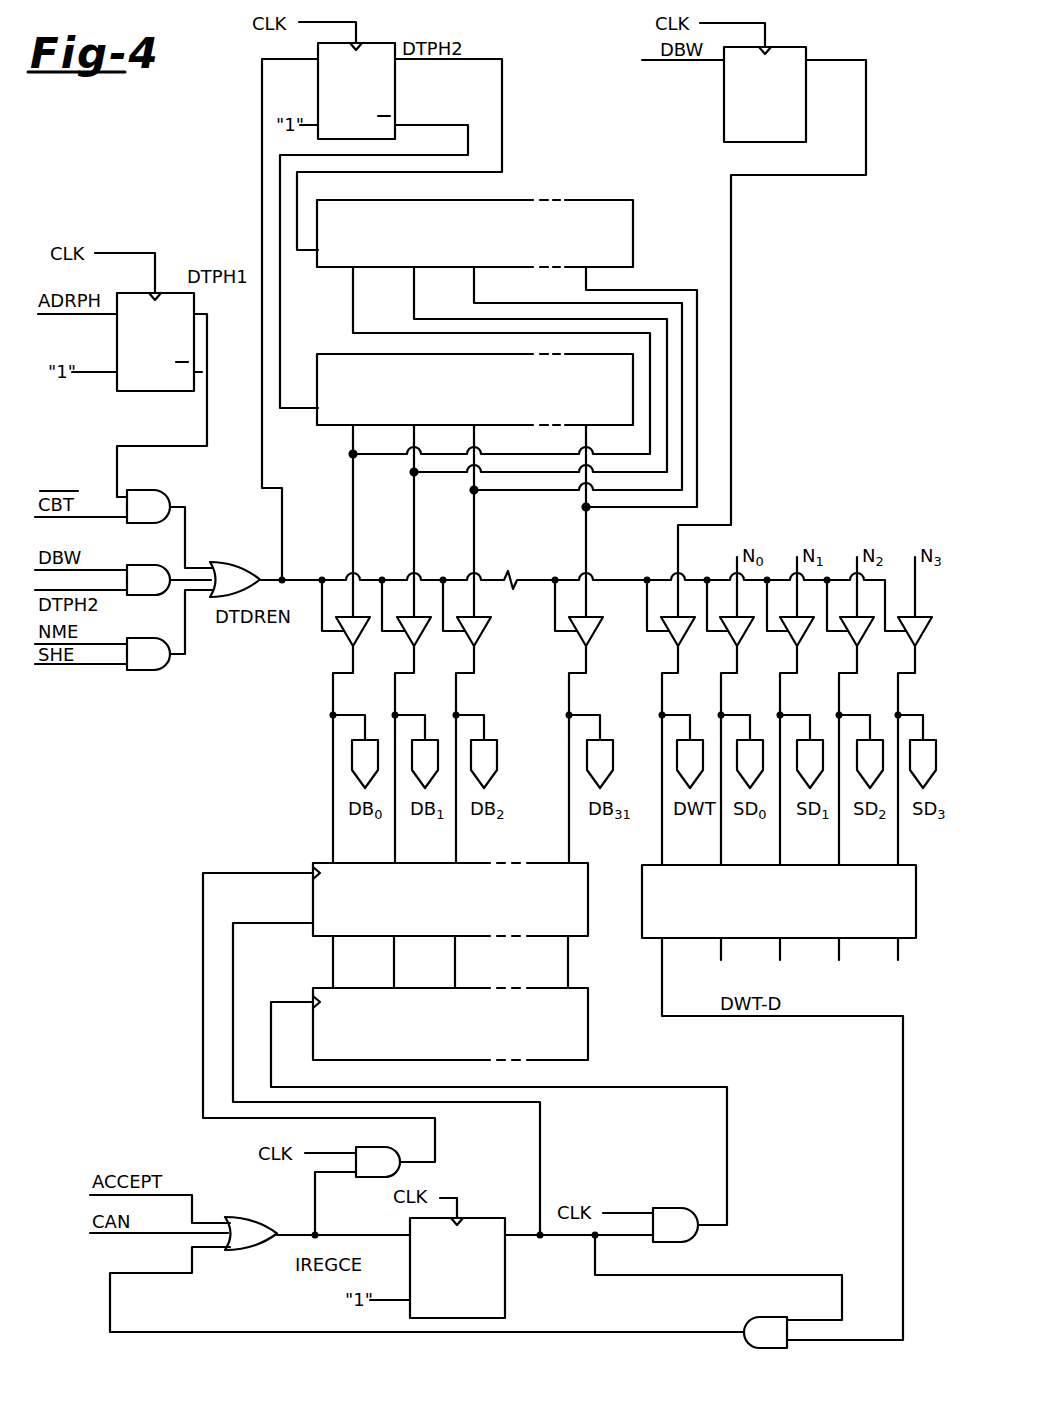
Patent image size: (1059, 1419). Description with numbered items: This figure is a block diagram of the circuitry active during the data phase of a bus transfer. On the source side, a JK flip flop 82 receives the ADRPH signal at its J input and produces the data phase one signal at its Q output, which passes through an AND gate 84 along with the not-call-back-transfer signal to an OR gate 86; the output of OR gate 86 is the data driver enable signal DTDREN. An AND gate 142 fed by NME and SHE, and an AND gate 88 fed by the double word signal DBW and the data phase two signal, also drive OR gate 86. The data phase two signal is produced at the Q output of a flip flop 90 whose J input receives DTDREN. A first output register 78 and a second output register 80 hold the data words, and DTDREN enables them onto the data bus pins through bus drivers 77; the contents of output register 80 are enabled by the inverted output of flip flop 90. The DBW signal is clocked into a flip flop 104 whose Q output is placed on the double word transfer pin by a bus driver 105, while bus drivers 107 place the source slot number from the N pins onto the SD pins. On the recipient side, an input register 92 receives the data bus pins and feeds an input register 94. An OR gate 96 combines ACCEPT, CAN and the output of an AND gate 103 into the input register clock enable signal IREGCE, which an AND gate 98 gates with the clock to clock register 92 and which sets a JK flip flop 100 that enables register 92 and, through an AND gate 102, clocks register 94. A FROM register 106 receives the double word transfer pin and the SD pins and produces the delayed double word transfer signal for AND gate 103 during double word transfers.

The flip flop 90 is at (395, 101).
The flip flop 104 is at (724, 130).
The second output register 80 is at (322, 267).
The first output register 78 is at (322, 425).
The JK flip flop 82 is at (155, 391).
The AND gate 84 is at (183, 481).
The AND gate 88 is at (148, 565).
The AND gate 142 is at (140, 670).
The OR gate 86 is at (238, 562).
The bus drivers 77 is at (575, 637).
The bus driver 105 is at (667, 642).
The bus drivers 107 is at (906, 637).
The input register 92 is at (470, 863).
The input register 94 is at (470, 988).
The FROM register 106 is at (697, 938).
The OR gate 96 is at (262, 1217).
The AND gate 98 is at (372, 1177).
The JK flip flop 100 is at (505, 1300).
The AND gate 102 is at (672, 1208).
The AND gate 103 is at (751, 1318).